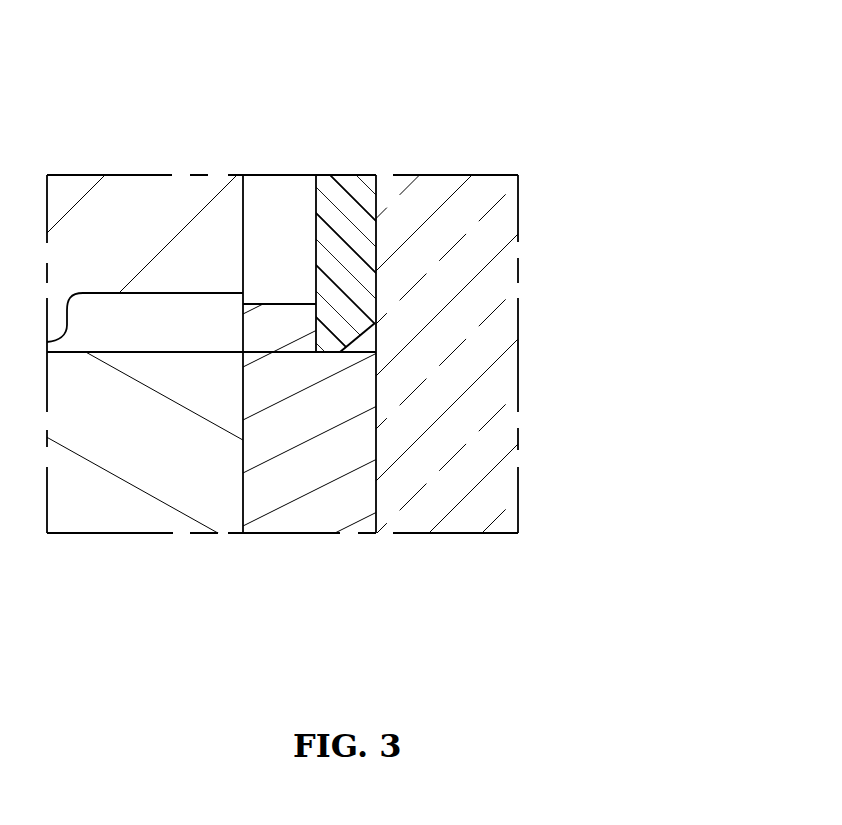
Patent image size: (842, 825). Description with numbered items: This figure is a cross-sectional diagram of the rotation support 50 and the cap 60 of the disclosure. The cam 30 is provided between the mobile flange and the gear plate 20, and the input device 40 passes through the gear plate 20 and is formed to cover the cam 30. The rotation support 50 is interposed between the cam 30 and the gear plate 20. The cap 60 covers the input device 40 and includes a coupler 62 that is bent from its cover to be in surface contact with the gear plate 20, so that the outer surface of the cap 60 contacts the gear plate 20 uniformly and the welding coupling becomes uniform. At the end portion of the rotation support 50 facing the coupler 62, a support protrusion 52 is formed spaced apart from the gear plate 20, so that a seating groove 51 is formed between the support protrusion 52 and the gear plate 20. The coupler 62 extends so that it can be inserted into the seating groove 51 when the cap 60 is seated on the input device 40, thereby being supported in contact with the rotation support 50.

The gear plate 20 is at (463, 428).
The cam 30 is at (135, 470).
The input device 40 is at (137, 215).
The rotation support 50 is at (303, 470).
The seating groove 51 is at (363, 352).
The support protrusion 52 is at (283, 343).
The cap 60 is at (363, 223).
The coupler 62 is at (345, 222).